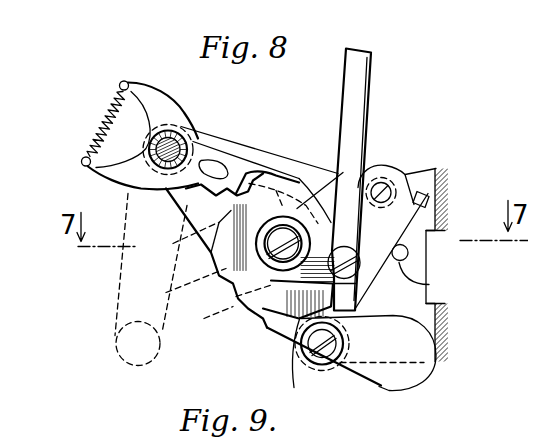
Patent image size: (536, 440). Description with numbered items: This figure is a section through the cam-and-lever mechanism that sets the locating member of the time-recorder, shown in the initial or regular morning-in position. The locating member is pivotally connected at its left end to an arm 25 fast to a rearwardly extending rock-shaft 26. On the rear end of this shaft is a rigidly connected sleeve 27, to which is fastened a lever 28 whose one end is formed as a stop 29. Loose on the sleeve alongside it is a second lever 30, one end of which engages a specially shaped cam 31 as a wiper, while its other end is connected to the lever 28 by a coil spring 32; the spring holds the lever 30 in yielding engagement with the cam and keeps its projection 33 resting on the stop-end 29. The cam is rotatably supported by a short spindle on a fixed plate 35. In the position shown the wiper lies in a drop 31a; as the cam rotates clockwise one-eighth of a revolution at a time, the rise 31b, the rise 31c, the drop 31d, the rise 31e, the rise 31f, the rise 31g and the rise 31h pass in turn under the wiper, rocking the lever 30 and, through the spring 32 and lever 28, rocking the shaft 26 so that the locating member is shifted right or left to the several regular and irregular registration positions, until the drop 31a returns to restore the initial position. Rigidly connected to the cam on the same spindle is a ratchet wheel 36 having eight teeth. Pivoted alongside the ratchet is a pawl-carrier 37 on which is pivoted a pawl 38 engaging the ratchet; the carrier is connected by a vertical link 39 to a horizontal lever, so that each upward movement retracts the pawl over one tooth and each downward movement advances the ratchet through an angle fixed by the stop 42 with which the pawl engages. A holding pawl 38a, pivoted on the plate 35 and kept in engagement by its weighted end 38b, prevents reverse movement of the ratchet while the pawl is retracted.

The arm 25 is at (128, 280).
The rock-shaft 26 is at (181, 143).
The sleeve 27 is at (157, 170).
The lever 28 is at (150, 90).
The stop 29 is at (237, 186).
The lever (wiper) 30 is at (102, 168).
The cam 31 is at (358, 380).
The drop 31a is at (337, 193).
The rise 31b is at (270, 165).
The rise 31c is at (179, 239).
The drop 31d is at (203, 285).
The rise 31e is at (204, 317).
The rise 31f is at (307, 361).
The rise 31g is at (363, 292).
The rise 31h is at (358, 233).
The coil spring 32 is at (104, 116).
The projection 33 is at (228, 162).
The fixed plate 35 is at (320, 165).
The ratchet wheel 36 is at (248, 306).
The pawl-carrier 37 is at (375, 257).
The pawl 38 is at (410, 255).
The holding pawl 38a is at (283, 327).
The weighted end 38b is at (426, 372).
The vertical link 39 is at (358, 70).
The stop 42 is at (428, 284).